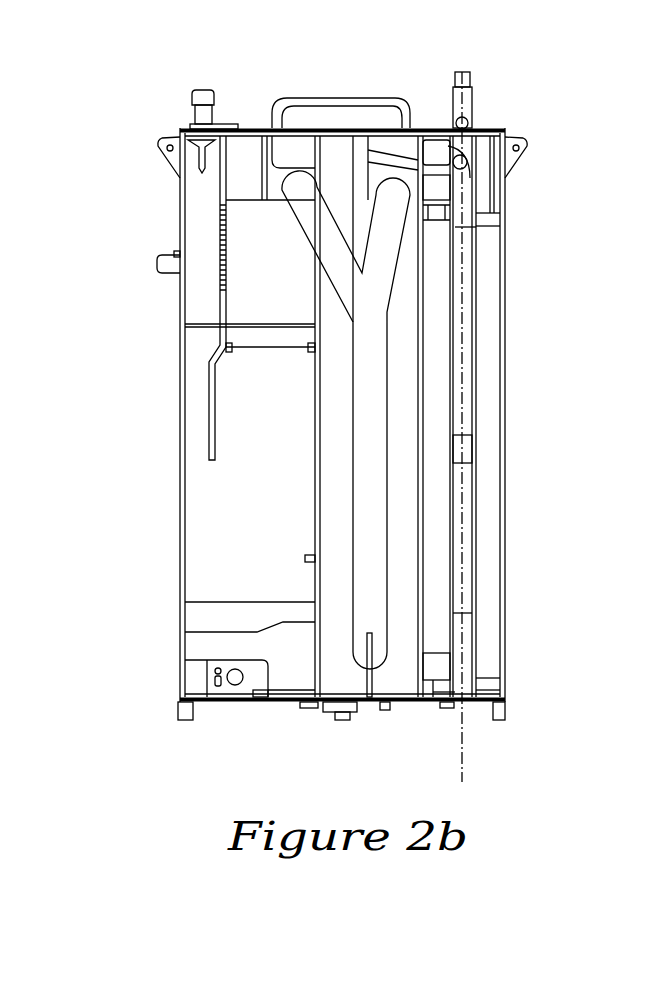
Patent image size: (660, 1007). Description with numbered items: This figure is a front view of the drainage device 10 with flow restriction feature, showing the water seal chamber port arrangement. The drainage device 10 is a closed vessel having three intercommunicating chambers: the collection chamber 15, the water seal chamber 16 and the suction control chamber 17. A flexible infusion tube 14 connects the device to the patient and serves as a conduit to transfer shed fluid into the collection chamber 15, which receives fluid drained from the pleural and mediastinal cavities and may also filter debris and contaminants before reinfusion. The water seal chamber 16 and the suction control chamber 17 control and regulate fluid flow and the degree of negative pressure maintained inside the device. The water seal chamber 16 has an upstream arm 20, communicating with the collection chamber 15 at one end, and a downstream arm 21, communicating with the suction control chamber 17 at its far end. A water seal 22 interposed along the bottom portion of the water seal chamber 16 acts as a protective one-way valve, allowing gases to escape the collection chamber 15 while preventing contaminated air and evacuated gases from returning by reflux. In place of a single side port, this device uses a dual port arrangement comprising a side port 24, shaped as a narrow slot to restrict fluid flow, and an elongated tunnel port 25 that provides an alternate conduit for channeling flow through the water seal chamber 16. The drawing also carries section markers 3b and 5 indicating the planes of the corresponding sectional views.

The drainage device 10 is at (505, 95).
The infusion tube 14 is at (182, 323).
The collection chamber 15 is at (267, 516).
The water seal chamber 16 is at (436, 462).
The suction control chamber 17 is at (500, 560).
The upstream arm 20 is at (433, 600).
The downstream arm 21 is at (463, 490).
The water seal 22 is at (505, 702).
The side port 24 is at (447, 702).
The tunnel port 25 is at (435, 698).
The section line 3b is at (462, 72).
The section line 5 is at (518, 622).